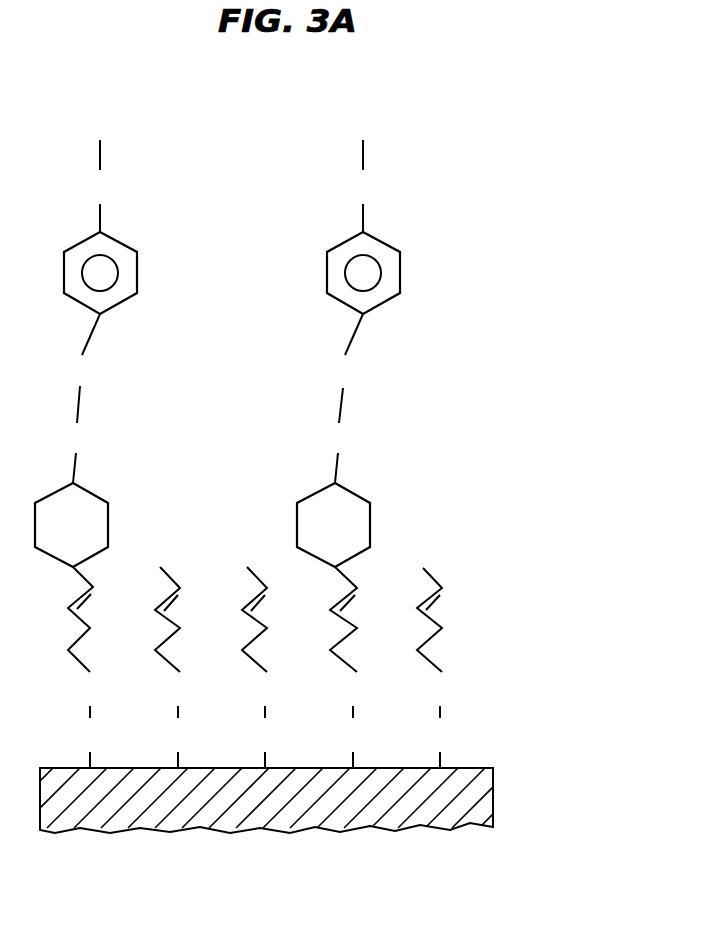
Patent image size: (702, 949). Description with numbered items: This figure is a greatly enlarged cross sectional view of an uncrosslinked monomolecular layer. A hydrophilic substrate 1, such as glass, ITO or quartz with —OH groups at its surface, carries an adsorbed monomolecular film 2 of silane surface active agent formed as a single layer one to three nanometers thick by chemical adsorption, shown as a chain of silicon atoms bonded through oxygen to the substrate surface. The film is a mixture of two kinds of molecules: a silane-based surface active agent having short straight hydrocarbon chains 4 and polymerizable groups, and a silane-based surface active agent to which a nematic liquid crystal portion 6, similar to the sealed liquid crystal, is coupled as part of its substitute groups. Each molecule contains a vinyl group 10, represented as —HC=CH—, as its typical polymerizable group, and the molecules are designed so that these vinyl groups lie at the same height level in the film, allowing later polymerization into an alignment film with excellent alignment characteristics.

The hydrophilic substrate 1 is at (493, 790).
The adsorbed monomolecular film 2 is at (525, 493).
The short straight hydrocarbon chain 4 is at (430, 640).
The nematic liquid crystal portion 6 is at (548, 133).
The vinyl group 10 is at (445, 597).